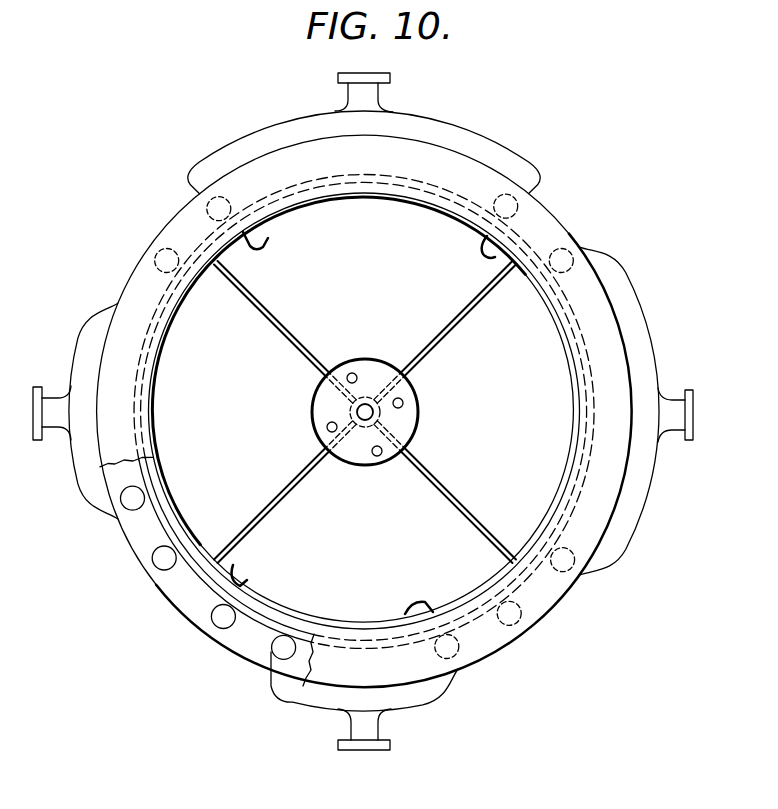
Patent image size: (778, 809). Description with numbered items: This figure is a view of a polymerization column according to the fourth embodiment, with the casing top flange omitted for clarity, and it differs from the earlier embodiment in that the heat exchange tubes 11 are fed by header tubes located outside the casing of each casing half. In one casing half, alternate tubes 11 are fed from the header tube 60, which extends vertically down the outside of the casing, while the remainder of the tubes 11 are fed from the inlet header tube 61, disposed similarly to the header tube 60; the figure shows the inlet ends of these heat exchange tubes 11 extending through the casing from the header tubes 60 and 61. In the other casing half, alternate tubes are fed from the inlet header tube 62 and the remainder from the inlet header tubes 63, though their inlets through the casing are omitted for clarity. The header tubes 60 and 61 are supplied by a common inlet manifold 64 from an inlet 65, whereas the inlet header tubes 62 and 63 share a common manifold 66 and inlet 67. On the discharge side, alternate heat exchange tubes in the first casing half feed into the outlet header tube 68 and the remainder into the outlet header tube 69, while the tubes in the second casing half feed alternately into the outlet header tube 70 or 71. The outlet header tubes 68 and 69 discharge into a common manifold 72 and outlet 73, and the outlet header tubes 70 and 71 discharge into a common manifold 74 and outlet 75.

The heat exchange tubes 11 is at (262, 250).
The header tube 60 is at (197, 197).
The inlet header tube 61 is at (540, 197).
The inlet header tube 62 is at (597, 242).
The inlet header tubes 63 is at (567, 587).
The common inlet manifold 64 is at (486, 128).
The inlet 65 is at (380, 92).
The common manifold 66 is at (634, 534).
The inlet 67 is at (672, 399).
The outlet header tube 68 is at (505, 654).
The outlet header tube 69 is at (273, 657).
The outlet header tube 70 is at (152, 556).
The outlet header tube 71 is at (157, 258).
The common manifold 72 is at (444, 702).
The outlet 73 is at (384, 717).
The common manifold 74 is at (80, 333).
The outlet 75 is at (30, 386).